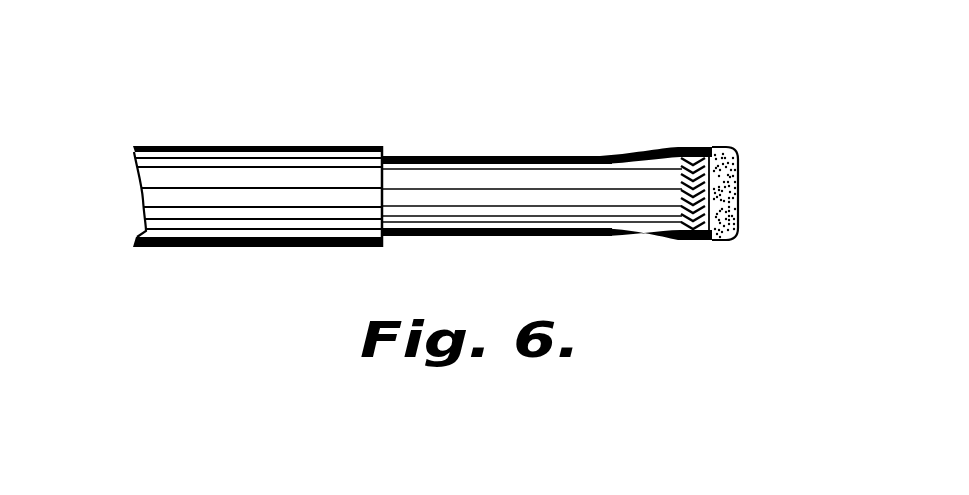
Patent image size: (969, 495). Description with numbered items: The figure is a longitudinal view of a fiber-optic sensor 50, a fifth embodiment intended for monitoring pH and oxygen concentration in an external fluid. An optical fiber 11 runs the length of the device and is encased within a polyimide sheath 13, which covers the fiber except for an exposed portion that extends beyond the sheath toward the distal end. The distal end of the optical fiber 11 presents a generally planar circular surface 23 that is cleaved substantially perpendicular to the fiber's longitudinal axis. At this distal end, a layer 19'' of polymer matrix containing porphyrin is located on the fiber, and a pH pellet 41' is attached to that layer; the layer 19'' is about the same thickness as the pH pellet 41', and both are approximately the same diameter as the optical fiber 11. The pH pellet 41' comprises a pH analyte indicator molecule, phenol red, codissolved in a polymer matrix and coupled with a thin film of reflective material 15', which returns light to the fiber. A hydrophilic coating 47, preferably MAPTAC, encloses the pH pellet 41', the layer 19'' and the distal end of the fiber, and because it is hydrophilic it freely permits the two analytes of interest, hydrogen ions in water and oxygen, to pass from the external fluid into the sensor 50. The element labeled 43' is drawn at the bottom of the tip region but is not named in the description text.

The polyimide sheath 13 is at (260, 145).
The optical fiber 11 is at (470, 157).
The planar circular surface 23 is at (662, 147).
The pH pellet 41' is at (746, 135).
The thin film of reflective material 15' is at (766, 192).
The hydrophilic coating 47 is at (737, 208).
The layer of polymer matrix containing porphyrin 19'' is at (656, 275).
The ferrule 43' is at (718, 233).
The sensor 50 is at (156, 312).